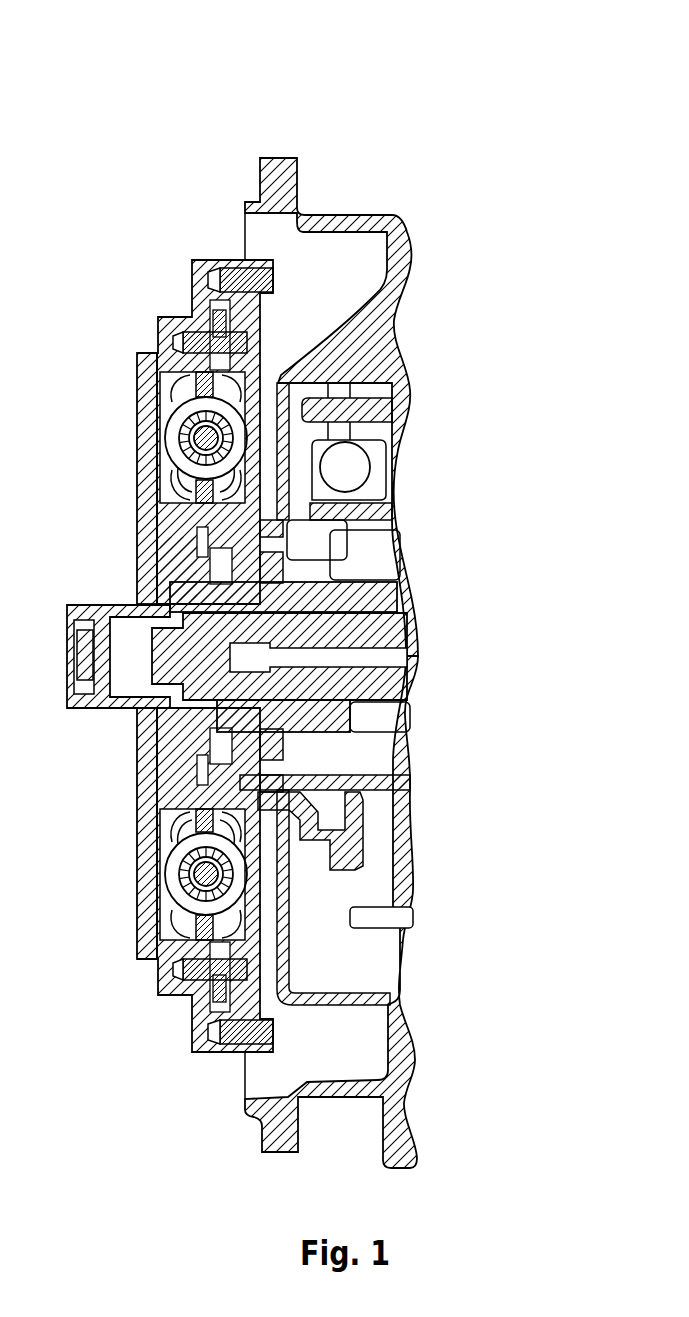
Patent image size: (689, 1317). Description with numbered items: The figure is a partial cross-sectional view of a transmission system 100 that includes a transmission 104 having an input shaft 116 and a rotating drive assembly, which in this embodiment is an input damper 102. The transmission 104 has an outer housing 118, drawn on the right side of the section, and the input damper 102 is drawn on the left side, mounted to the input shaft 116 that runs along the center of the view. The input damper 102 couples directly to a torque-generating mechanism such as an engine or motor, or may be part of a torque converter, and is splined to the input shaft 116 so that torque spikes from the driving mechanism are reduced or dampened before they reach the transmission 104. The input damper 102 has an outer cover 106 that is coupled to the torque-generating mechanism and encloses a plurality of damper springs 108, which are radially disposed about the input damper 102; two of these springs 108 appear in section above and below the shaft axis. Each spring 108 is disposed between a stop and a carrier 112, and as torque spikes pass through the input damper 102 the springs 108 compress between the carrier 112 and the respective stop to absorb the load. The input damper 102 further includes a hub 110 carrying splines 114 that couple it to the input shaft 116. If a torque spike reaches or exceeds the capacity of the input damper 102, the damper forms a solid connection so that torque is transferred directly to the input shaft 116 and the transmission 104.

The transmission system 100 is at (270, 594).
The input damper 102 is at (172, 302).
The transmission 104 is at (403, 459).
The outer cover 106 is at (137, 487).
The damper springs 108 is at (193, 440).
The hub 110 is at (182, 557).
The carrier 112 is at (185, 824).
The splines 114 is at (380, 594).
The input shaft 116 is at (392, 680).
The outer housing 118 is at (397, 258).